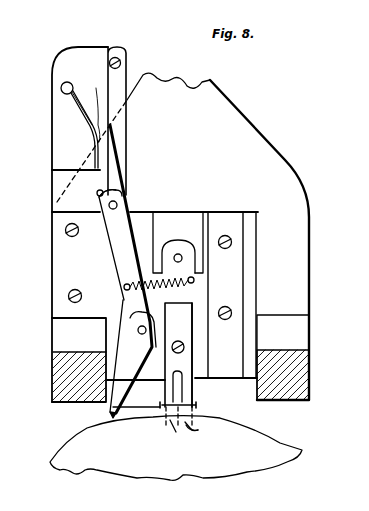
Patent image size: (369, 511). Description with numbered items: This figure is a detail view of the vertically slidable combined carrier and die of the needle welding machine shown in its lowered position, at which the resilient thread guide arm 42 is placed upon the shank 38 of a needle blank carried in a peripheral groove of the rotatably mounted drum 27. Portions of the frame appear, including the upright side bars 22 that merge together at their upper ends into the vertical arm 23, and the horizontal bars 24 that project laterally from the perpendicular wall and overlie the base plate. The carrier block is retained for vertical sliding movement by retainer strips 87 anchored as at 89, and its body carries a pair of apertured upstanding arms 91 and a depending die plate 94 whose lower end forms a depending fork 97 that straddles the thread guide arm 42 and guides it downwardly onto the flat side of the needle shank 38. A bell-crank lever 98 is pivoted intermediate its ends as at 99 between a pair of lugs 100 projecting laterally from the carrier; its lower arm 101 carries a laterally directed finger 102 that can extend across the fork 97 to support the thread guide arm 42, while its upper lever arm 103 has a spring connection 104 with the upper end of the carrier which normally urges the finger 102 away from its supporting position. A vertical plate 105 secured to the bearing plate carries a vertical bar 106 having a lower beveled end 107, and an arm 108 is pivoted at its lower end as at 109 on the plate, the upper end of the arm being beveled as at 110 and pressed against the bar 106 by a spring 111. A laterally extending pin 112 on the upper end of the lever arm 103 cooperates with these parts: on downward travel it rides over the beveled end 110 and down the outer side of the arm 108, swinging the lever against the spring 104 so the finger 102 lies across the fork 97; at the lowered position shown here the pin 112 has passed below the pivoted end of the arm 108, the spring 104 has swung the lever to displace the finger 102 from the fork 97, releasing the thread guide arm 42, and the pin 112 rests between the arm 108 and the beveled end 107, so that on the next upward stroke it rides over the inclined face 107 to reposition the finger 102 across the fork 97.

The upright side bars 22 is at (290, 242).
The vertical arm 23 is at (210, 98).
The horizontal bars 24 is at (53, 388).
The needle blank supporting drum 27 is at (277, 447).
The shank 38 is at (177, 422).
The resilient thread guide arm 42 is at (193, 392).
The retainer strips 87 is at (60, 283).
The anchors 89 is at (65, 232).
The apertured upstanding arms 91 is at (183, 242).
The die plate 94 is at (182, 362).
The depending fork 97 is at (212, 438).
The bell-crank lever 98 is at (123, 322).
The pivot 99 is at (147, 328).
The lugs 100 is at (132, 318).
The lower arm 101 is at (100, 388).
The finger 102 is at (148, 409).
The upper lever arm 103 is at (118, 260).
The spring connection 104 is at (164, 290).
The vertical plate 105 is at (68, 64).
The vertical bar 106 is at (121, 130).
The lower beveled end 107 is at (114, 193).
The arm 108 is at (100, 171).
The pivot 109 is at (96, 191).
The beveled upper end 110 is at (81, 120).
The spring 111 is at (82, 115).
The pin 112 is at (118, 198).